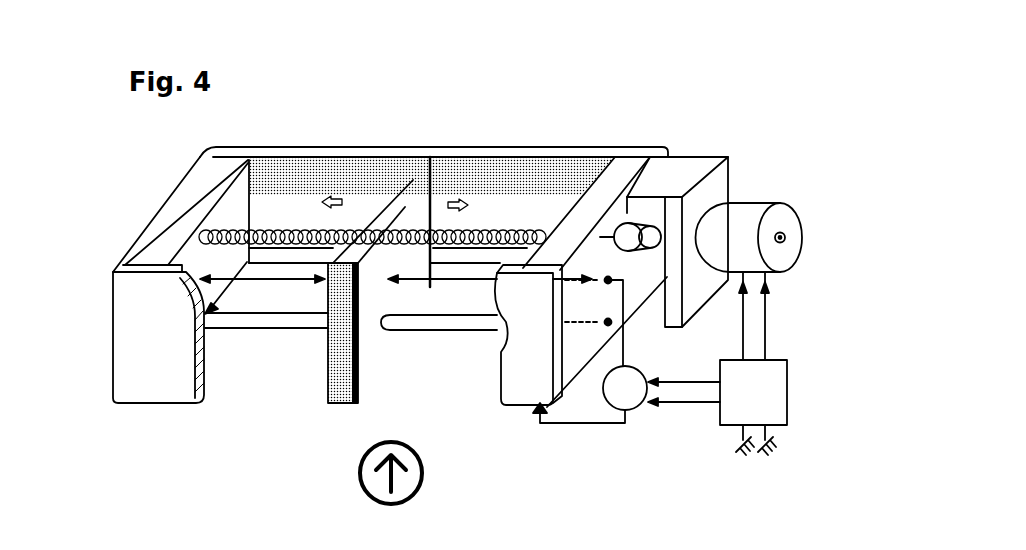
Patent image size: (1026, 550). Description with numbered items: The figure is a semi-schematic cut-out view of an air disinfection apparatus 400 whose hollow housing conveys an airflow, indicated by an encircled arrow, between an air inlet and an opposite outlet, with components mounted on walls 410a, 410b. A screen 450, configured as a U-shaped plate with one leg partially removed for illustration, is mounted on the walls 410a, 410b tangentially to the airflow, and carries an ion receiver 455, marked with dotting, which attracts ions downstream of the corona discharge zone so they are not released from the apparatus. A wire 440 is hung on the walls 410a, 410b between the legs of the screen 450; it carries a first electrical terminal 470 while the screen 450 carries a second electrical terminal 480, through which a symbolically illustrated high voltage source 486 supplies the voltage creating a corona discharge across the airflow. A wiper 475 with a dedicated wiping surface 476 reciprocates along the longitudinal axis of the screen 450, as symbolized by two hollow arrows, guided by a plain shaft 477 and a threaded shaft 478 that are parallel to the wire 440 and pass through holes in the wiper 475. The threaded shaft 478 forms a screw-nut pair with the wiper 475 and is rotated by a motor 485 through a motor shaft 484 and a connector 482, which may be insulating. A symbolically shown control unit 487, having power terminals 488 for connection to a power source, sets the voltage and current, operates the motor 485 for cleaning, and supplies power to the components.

The air disinfection apparatus 400 is at (750, 96).
The wall 410a is at (178, 214).
The wall 410b is at (682, 167).
The wire 440 is at (282, 283).
The screen 450 is at (133, 360).
The ion receiver 455 is at (357, 176).
The first electrical terminal 470 is at (614, 288).
The wiper 475 is at (422, 192).
The wiping surface 476 is at (349, 363).
The plain shaft 477 is at (315, 323).
The threaded shaft 478 is at (290, 233).
The second electrical terminal 480 is at (535, 411).
The connector 482 is at (610, 235).
The motor shaft 484 is at (729, 180).
The motor 485 is at (782, 280).
The high voltage source 486 is at (640, 410).
The control unit 487 is at (770, 370).
The power terminals 488 is at (748, 458).